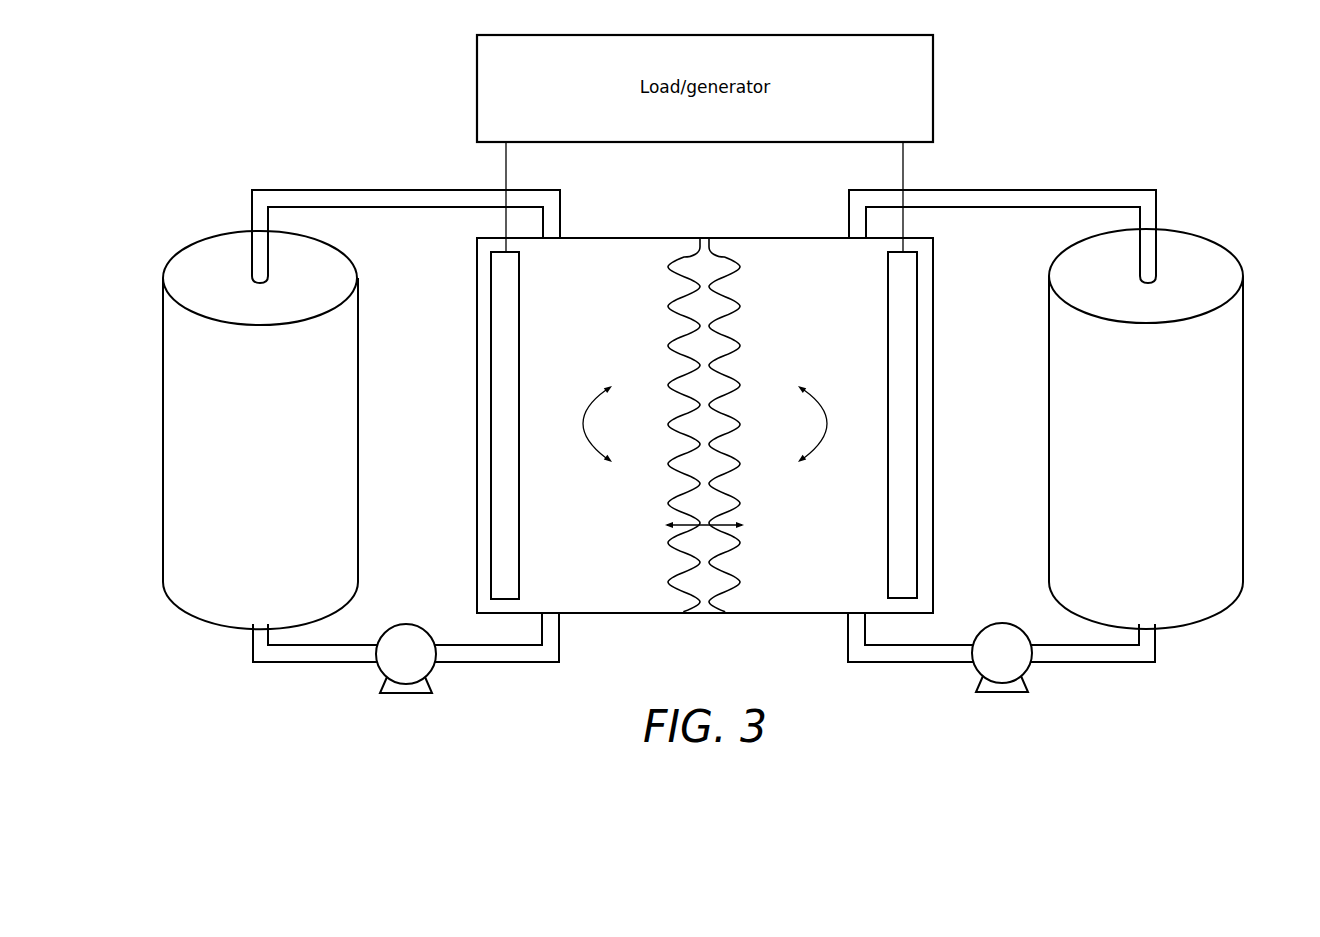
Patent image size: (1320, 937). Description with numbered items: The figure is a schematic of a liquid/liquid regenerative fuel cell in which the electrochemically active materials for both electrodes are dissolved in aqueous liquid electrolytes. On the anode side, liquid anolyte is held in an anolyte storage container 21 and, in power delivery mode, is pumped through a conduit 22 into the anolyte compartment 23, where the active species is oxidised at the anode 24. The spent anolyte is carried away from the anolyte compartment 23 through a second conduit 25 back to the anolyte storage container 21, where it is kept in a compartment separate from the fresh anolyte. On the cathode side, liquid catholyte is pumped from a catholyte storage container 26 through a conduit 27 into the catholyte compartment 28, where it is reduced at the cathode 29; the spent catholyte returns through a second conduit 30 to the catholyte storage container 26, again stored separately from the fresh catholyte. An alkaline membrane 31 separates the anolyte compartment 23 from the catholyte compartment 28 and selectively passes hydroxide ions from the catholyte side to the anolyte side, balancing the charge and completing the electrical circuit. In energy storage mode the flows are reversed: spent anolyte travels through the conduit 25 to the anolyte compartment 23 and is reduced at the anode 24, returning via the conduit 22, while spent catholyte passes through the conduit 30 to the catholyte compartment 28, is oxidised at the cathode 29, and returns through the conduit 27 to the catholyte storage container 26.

The anolyte storage container 21 is at (163, 291).
The conduit 22 is at (317, 663).
The anolyte compartment 23 is at (537, 530).
The anode 24 is at (491, 588).
The second conduit 25 is at (376, 190).
The catholyte storage container 26 is at (1243, 288).
The conduit 27 is at (1086, 662).
The catholyte compartment 28 is at (869, 532).
The cathode 29 is at (917, 587).
The second conduit 30 is at (1010, 190).
The alkaline membrane 31 is at (706, 613).